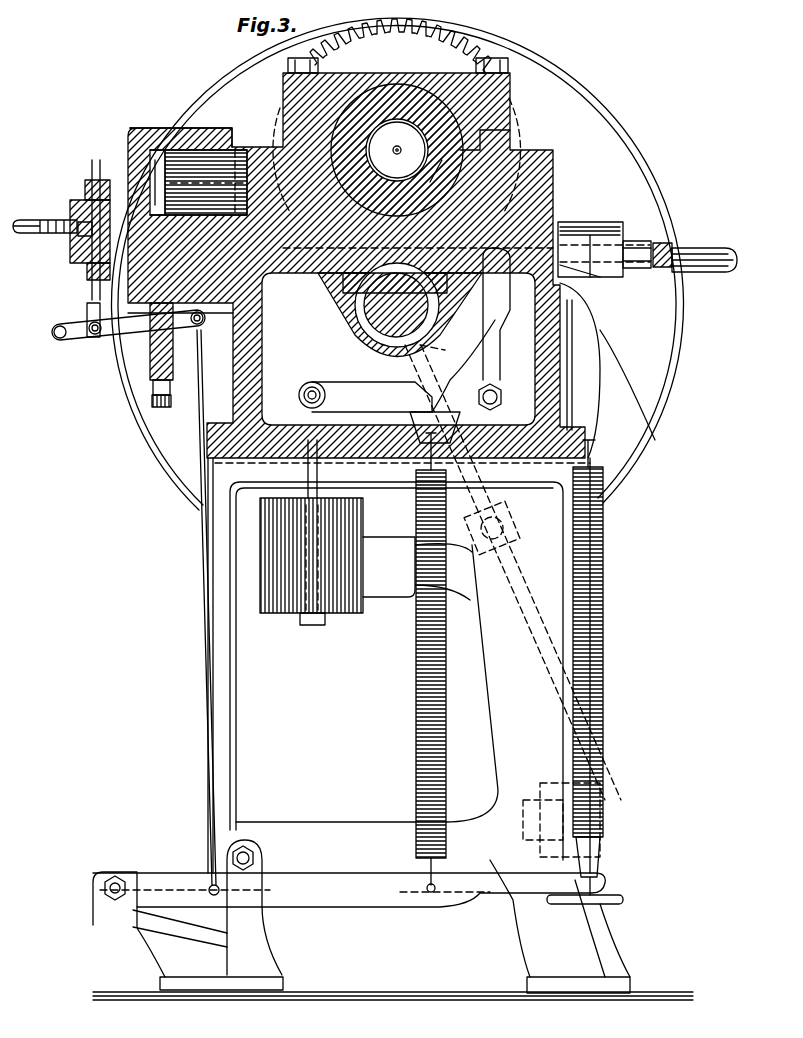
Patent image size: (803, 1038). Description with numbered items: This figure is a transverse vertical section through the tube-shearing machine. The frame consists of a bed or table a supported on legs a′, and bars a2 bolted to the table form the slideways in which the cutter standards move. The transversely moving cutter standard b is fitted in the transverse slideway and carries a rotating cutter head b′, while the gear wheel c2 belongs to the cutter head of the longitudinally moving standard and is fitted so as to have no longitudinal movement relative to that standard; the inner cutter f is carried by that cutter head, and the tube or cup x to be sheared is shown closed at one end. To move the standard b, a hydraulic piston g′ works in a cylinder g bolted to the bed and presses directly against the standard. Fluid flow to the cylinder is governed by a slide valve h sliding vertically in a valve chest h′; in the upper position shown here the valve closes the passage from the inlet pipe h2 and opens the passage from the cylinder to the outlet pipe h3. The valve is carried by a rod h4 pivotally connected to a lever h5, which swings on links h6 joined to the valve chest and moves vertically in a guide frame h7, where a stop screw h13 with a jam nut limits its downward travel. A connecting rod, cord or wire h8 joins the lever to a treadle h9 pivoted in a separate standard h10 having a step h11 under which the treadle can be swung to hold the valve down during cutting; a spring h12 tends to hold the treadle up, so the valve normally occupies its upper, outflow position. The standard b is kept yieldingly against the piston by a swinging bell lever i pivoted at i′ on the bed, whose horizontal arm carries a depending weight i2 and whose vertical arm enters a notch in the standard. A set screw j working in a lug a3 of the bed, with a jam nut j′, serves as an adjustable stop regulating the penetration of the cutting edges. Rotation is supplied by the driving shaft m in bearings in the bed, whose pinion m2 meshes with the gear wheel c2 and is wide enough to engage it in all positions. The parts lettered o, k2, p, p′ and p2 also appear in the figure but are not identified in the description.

The fly-wheel o is at (605, 116).
The bed or table a is at (356, 258).
The legs a′ is at (399, 665).
The bars a2 is at (600, 277).
The lug a3 is at (592, 222).
The transversely moving cutter standard b is at (553, 160).
The cutter head b′ is at (432, 175).
The gear wheel c2 is at (470, 50).
The inner cutter f is at (397, 150).
The tube or cup x is at (389, 141).
The cylinder g is at (181, 123).
The hydraulic piston g′ is at (245, 150).
The slide valve h is at (70, 218).
The valve chest h′ is at (85, 190).
The inlet pipe h2 is at (44, 214).
The outlet pipe h3 is at (87, 283).
The rod h4 is at (96, 166).
The lever h5 is at (88, 337).
The links h6 is at (54, 331).
The guide frame h7 is at (173, 340).
The connecting rod, cord or wire h8 is at (200, 534).
The treadle h9 is at (349, 879).
The treadle standard h10 is at (125, 950).
The step h11 is at (262, 872).
The spring h12 is at (414, 662).
The stop screw h13 is at (152, 397).
The swinging bell lever i is at (404, 345).
The pivot i′ is at (488, 412).
The weight i2 is at (363, 520).
The set screw j is at (665, 243).
The jam nut j′ is at (632, 241).
The handle k2 is at (720, 272).
The driving shaft m is at (365, 318).
The pinion m2 is at (350, 345).
The spring plate p is at (610, 904).
The spring p′ is at (603, 660).
The connecting rod p2 is at (522, 635).